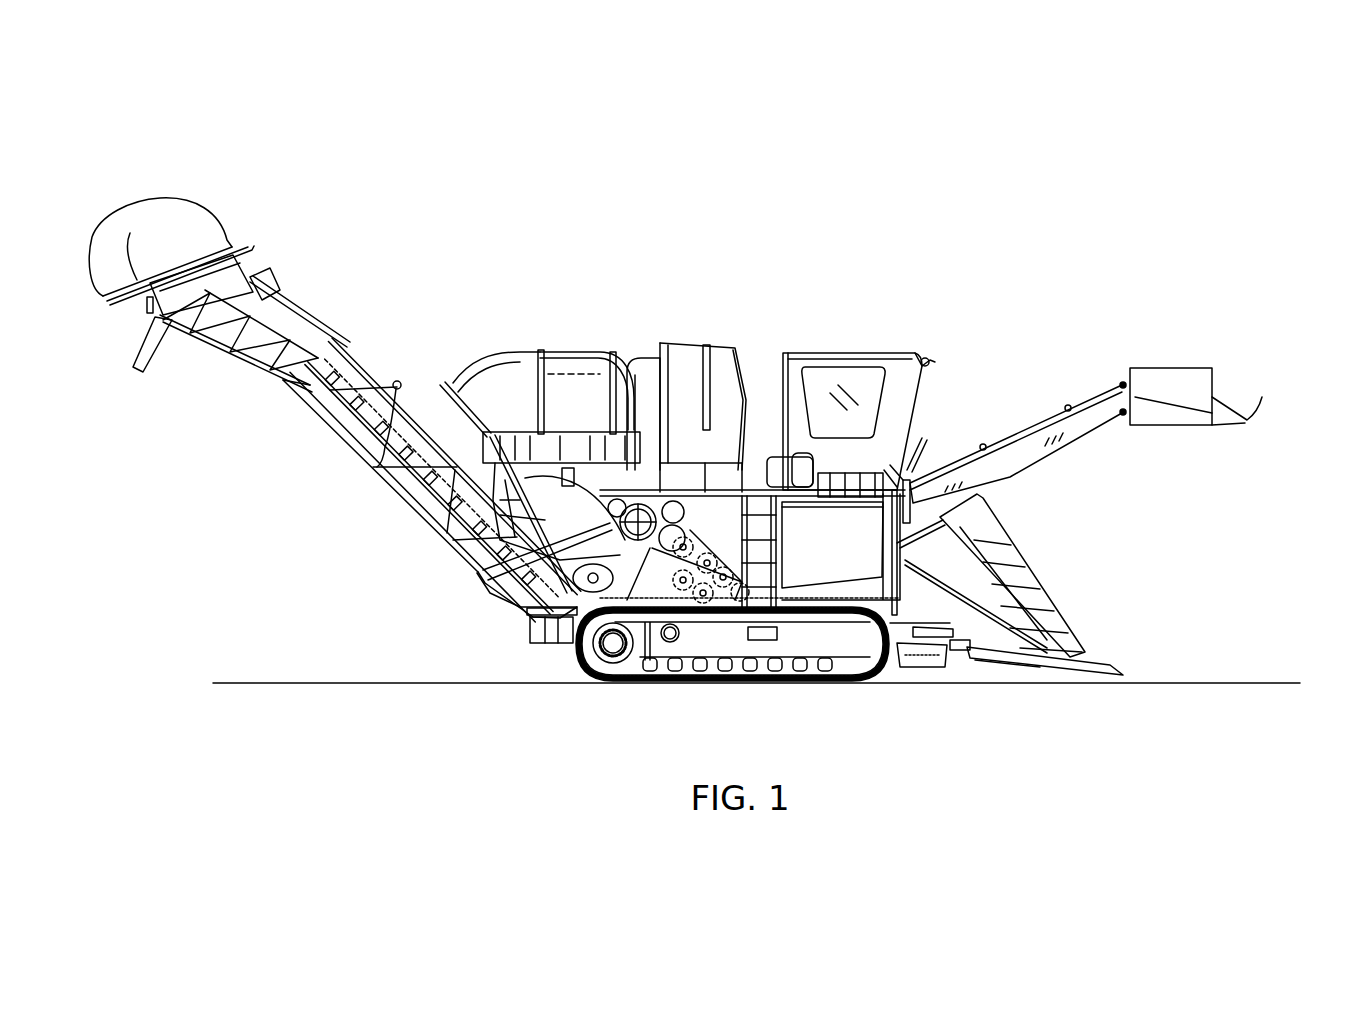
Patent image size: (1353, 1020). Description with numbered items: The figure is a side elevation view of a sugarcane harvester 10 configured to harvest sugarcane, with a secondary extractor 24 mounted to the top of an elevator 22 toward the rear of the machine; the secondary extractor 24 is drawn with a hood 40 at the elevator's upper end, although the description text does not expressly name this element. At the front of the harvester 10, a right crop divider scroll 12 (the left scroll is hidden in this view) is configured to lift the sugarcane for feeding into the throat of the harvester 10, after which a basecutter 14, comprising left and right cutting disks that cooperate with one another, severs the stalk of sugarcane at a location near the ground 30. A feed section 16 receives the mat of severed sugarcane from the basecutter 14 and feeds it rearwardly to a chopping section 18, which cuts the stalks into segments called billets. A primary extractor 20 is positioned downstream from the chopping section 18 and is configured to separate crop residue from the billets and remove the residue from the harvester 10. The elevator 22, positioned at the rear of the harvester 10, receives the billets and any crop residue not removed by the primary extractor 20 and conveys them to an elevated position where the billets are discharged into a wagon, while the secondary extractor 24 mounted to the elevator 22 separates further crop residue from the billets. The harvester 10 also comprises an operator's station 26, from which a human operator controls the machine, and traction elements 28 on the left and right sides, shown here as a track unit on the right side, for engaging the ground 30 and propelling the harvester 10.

The sugarcane harvester 10 is at (822, 142).
The crop divider scroll 12 is at (1033, 570).
The basecutter 14 is at (941, 661).
The feed section 16 is at (707, 545).
The chopping section 18 is at (642, 512).
The primary extractor 20 is at (558, 407).
The elevator 22 is at (355, 365).
The secondary extractor 24 is at (142, 248).
The operator's station 26 is at (908, 351).
The traction element 28 is at (576, 660).
The ground 30 is at (343, 682).
The discharge hood 40 is at (185, 222).